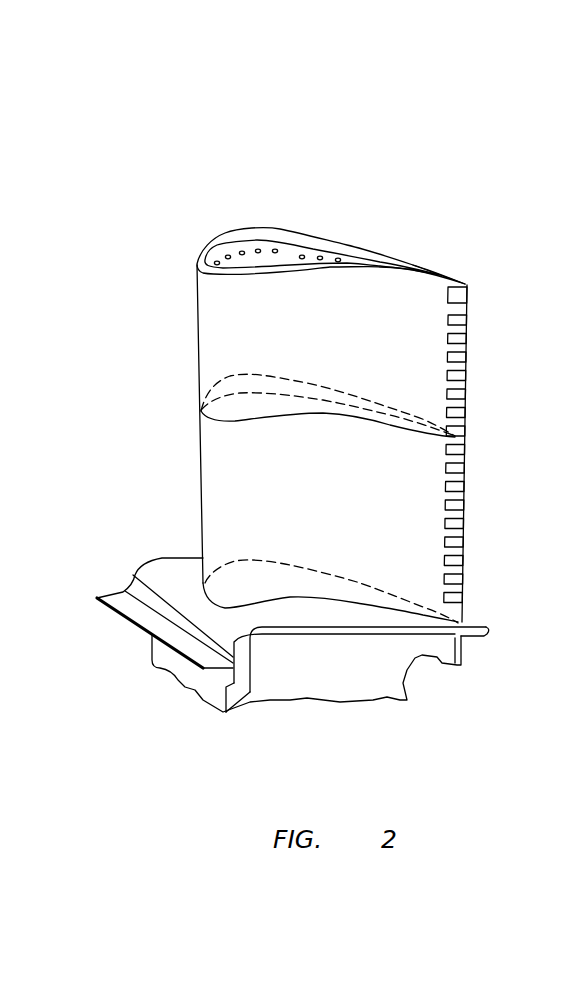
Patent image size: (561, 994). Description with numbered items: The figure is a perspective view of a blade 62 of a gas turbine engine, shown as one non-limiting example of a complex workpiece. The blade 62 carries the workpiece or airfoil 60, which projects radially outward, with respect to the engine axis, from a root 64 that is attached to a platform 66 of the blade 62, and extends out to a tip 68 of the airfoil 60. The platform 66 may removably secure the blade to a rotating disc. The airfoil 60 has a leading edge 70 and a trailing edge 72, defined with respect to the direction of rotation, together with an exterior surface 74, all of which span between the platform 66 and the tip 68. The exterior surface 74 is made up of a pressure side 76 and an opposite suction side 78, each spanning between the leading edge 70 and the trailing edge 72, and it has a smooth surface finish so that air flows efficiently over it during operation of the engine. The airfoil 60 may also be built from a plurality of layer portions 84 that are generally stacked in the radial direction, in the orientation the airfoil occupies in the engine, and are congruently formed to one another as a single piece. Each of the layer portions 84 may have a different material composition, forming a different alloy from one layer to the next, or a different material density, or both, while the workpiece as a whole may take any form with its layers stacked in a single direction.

The blade 62 is at (150, 162).
The airfoil 60 is at (192, 351).
The root 64 is at (203, 573).
The platform 66 is at (478, 625).
The tip 68 is at (378, 248).
The leading edge 70 is at (198, 447).
The trailing edge 72 is at (467, 470).
The exterior surface 74 is at (417, 353).
The pressure side 76 is at (417, 397).
The suction side 78 is at (427, 270).
The layer portions 84 is at (304, 349).